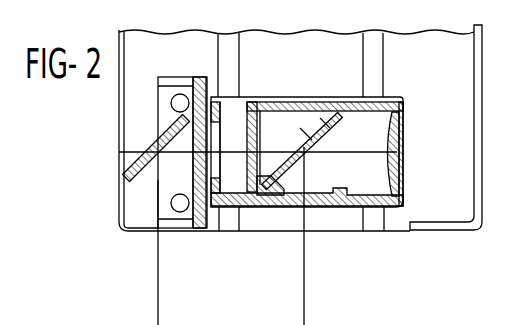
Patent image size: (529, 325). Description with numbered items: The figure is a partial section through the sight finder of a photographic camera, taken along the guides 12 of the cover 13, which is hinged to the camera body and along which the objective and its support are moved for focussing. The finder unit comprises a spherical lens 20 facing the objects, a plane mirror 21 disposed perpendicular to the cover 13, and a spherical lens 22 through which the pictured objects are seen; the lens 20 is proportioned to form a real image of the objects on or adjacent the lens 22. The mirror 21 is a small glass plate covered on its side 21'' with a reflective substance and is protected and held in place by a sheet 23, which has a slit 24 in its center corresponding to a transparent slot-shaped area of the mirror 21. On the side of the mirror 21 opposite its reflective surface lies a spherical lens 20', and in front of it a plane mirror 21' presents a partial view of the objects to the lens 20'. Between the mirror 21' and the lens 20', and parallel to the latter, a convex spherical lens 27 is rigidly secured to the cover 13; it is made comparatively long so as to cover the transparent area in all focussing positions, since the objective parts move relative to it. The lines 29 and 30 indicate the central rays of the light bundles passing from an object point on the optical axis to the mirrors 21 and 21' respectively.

The guides 12 is at (372, 217).
The cover 13 is at (465, 67).
The spherical lens 20 is at (307, 180).
The spherical lens 20' is at (230, 195).
The plane mirror 21 is at (314, 151).
The plane mirror 21' is at (137, 148).
The reflective side of mirror 21'' is at (276, 156).
The spherical lens 22 is at (402, 136).
The sheet 23 is at (326, 122).
The slit 24 is at (308, 137).
The lens 27 is at (193, 173).
The ray of light 29 is at (304, 294).
The ray of light 30 is at (158, 294).